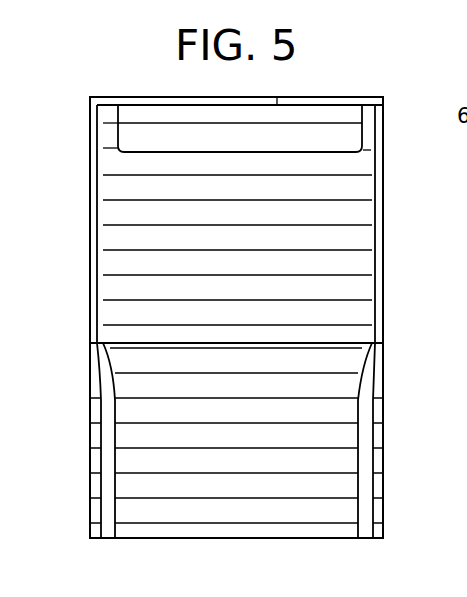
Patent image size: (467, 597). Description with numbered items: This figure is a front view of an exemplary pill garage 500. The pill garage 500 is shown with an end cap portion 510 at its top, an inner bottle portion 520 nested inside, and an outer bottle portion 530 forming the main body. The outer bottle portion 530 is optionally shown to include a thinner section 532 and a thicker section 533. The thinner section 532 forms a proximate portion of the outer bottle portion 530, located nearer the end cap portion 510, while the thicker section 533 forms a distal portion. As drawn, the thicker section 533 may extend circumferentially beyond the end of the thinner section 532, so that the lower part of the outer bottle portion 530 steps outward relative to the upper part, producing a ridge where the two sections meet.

The pill garage 500 is at (233, 274).
The end cap portion 510 is at (385, 97).
The inner bottle portion 520 is at (118, 133).
The outer bottle portion 530 is at (205, 466).
The thinner section 532 is at (95, 288).
The thicker section 533 is at (95, 445).